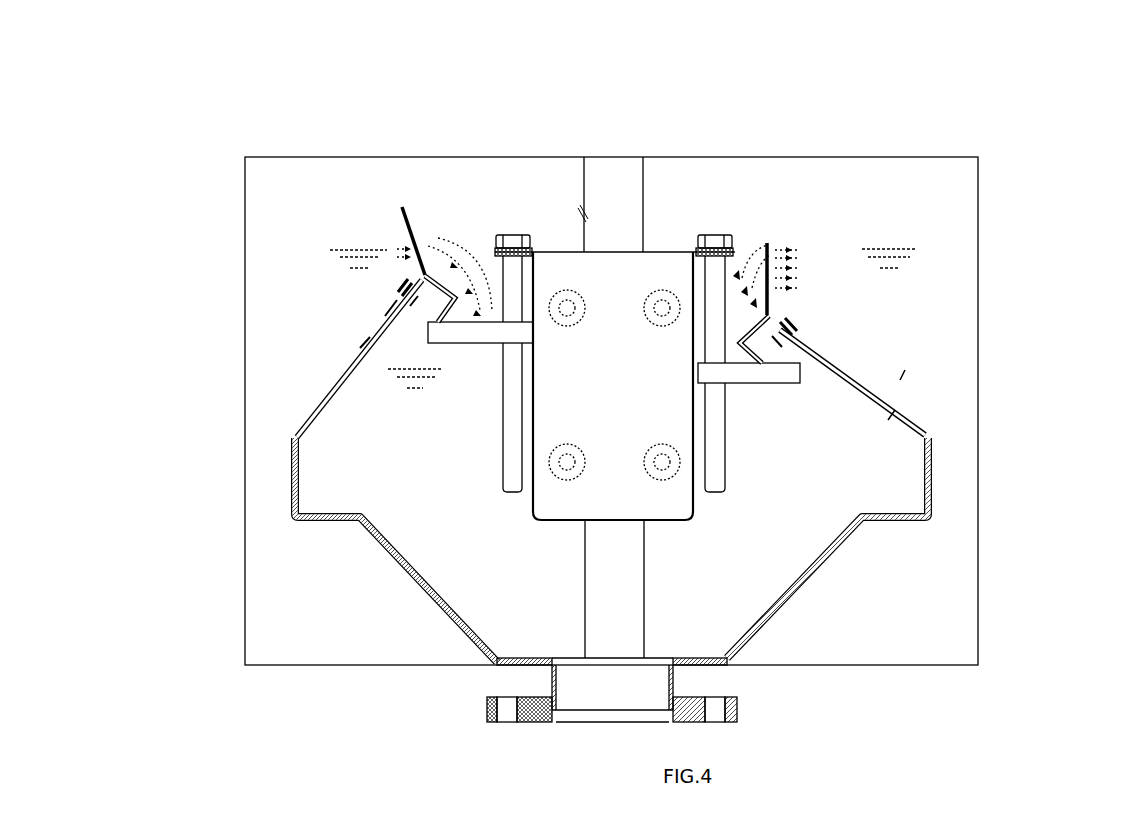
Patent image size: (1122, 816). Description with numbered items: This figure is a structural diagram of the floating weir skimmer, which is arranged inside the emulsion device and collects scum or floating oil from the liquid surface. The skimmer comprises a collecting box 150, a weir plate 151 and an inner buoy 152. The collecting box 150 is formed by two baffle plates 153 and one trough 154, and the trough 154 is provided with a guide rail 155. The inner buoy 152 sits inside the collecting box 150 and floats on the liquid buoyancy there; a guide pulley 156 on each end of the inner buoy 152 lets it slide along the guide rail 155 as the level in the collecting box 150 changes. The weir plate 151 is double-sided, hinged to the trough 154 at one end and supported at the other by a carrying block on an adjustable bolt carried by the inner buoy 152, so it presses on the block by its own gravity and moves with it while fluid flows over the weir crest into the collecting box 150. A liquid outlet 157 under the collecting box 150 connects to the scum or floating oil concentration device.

The collecting box 150 is at (897, 447).
The weir plate 151 is at (897, 388).
The inner buoy 152 is at (557, 273).
The baffle plate 153 is at (338, 157).
The trough 154 is at (285, 445).
The guide rail 155 is at (583, 215).
The guide pulley 156 is at (670, 285).
The liquid outlet 157 is at (740, 705).